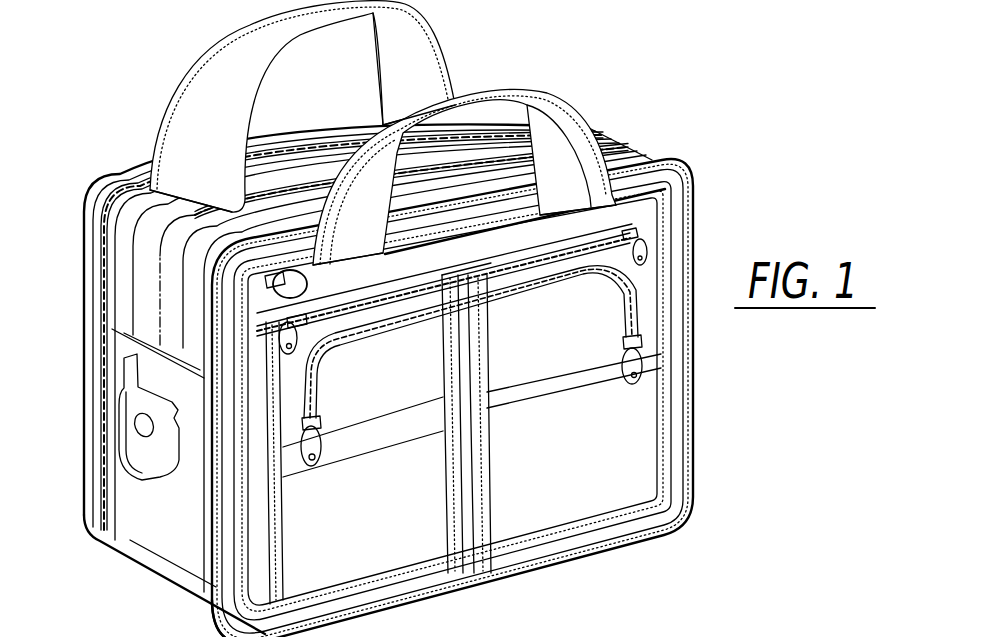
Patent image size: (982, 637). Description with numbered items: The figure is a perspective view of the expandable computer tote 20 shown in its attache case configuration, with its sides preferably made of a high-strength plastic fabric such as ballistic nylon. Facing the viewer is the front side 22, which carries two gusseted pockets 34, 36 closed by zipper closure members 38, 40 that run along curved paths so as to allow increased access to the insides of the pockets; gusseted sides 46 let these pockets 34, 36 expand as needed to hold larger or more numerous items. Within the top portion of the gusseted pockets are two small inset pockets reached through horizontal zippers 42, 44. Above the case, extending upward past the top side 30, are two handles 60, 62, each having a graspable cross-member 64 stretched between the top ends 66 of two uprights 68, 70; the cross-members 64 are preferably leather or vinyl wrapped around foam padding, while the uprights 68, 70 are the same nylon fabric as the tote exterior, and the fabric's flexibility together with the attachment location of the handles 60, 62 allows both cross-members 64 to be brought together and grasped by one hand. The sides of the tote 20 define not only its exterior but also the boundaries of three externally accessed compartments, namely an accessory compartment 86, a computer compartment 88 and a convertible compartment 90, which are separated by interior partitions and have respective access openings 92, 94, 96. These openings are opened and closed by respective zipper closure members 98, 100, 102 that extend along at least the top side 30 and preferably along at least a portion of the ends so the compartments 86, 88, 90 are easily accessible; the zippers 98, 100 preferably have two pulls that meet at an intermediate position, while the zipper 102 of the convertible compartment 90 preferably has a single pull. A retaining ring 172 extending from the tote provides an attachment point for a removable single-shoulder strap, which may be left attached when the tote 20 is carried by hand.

The expandable computer tote 20 is at (396, 319).
The front side 22 is at (640, 492).
The top side 30 is at (319, 160).
The gusseted pocket 34 is at (355, 553).
The gusseted pocket 36 is at (193, 580).
The zipper closure member 38 is at (313, 400).
The zipper closure member 40 is at (620, 306).
The horizontal zipper 42 is at (377, 280).
The horizontal zipper 44 is at (547, 262).
The gusseted sides 46 is at (263, 515).
The handle 60 is at (470, 154).
The handle 62 is at (430, 40).
The graspable cross-member 64 is at (302, 50).
The top ends 66 is at (235, 58).
The upright 68 is at (190, 138).
The upright 70 is at (388, 84).
The accessory compartment 86 is at (227, 323).
The computer compartment 88 is at (170, 290).
The convertible compartment 90 is at (95, 184).
The access opening 92 is at (213, 488).
The access opening 94 is at (258, 215).
The access opening 96 is at (110, 538).
The zipper closure member 98 is at (211, 521).
The zipper closure member 100 is at (165, 185).
The zipper closure member 102 is at (113, 546).
The retaining ring 172 is at (310, 285).